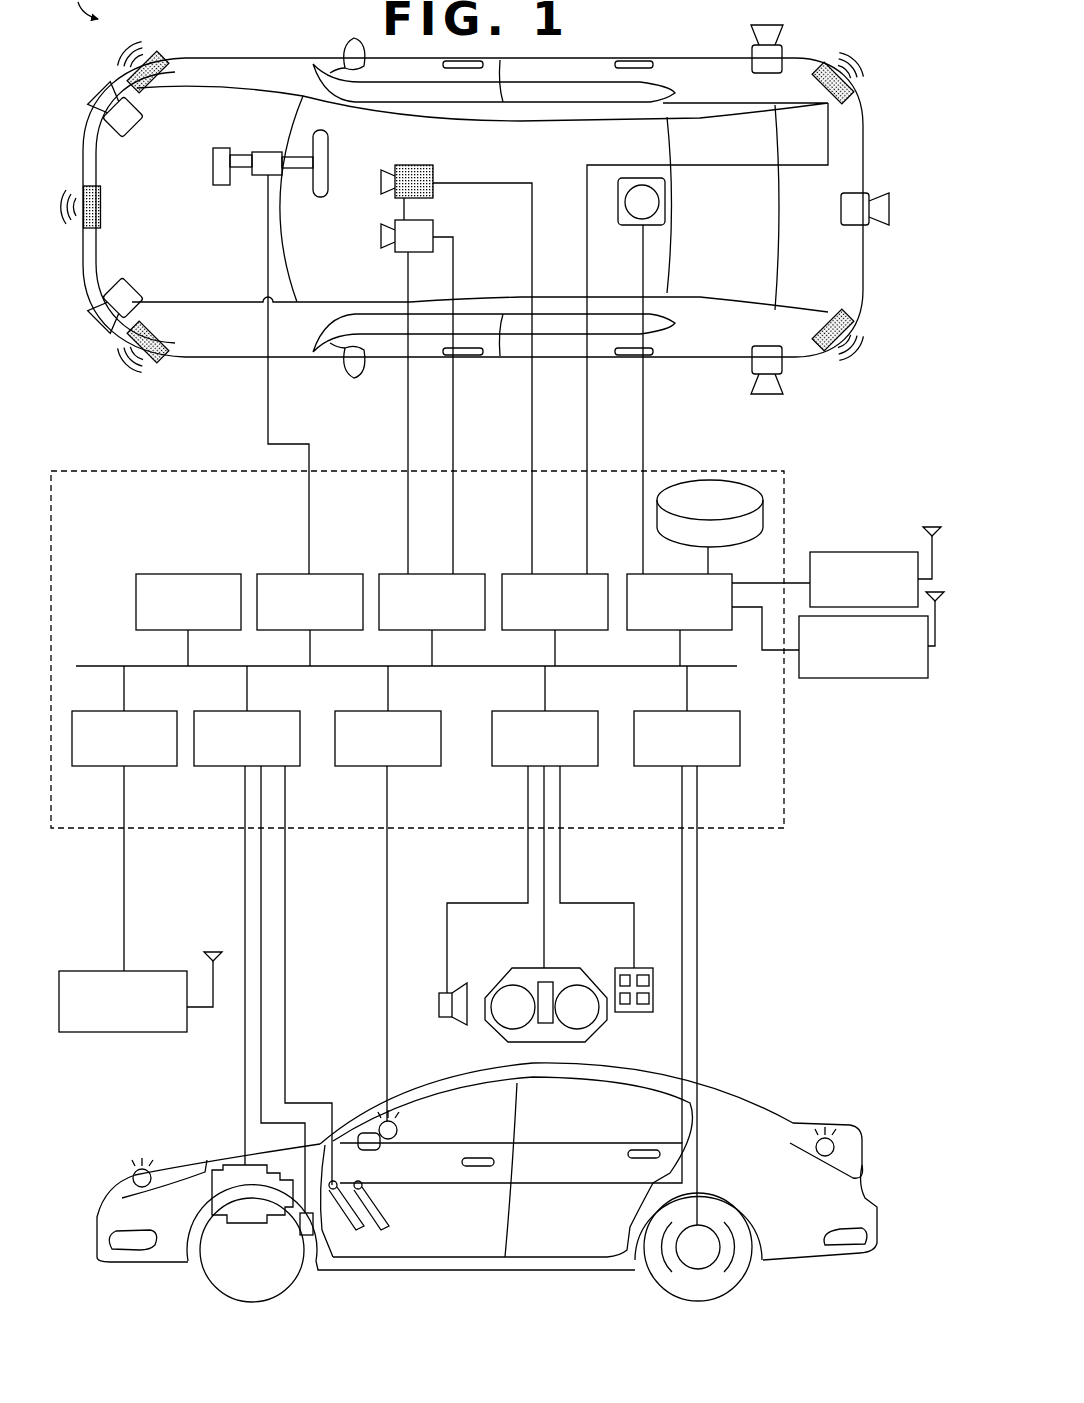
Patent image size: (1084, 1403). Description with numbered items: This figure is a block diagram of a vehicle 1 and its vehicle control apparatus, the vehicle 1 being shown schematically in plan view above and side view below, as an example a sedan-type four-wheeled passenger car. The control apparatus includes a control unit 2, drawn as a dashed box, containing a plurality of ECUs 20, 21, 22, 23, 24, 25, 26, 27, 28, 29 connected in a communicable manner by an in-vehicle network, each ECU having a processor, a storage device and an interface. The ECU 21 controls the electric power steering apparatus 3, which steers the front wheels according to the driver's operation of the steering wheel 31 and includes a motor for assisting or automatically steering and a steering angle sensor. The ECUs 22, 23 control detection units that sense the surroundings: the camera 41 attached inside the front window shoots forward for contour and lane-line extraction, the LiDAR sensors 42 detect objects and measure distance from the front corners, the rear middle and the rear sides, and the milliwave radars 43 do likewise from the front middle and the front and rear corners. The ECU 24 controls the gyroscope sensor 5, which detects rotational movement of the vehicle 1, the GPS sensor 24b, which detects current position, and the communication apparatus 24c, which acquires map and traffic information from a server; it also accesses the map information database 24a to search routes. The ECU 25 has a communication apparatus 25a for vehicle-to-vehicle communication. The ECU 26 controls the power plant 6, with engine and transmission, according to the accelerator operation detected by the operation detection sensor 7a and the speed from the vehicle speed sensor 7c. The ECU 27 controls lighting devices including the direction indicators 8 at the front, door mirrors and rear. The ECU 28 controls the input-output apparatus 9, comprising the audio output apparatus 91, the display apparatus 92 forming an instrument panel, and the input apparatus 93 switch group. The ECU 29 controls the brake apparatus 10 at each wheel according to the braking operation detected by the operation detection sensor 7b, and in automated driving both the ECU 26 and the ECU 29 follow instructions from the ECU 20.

The vehicle 1 is at (876, 114).
The control unit 2 is at (784, 830).
The electric power steering apparatus 3 is at (223, 186).
The steering wheel 31 is at (318, 198).
The camera 41 is at (433, 173).
The LiDAR sensor 42 is at (128, 136).
The radar 43 is at (160, 58).
The gyroscope sensor 5 is at (665, 200).
The power plant 6 is at (216, 1165).
The operation detection sensor 7a is at (340, 1145).
The operation detection sensor 7b is at (364, 1182).
The vehicle speed sensor 7c is at (310, 1240).
The direction indicator 8 is at (133, 1172).
The input-output apparatus 9 is at (534, 1015).
The audio output apparatus 91 is at (439, 1000).
The display apparatus 92 is at (503, 978).
The input apparatus 93 is at (633, 1012).
The brake apparatus 10 is at (698, 1270).
The ECU 20 is at (220, 574).
The ECU 21 is at (340, 574).
The ECU 22 is at (435, 574).
The ECU 23 is at (561, 574).
The ECU 24 is at (626, 574).
The map information database 24a is at (706, 482).
The GPS sensor 24b is at (870, 552).
The communication apparatus 24c is at (866, 678).
The ECU 25 is at (154, 766).
The communication apparatus 25a is at (125, 1032).
The ECU 26 is at (222, 766).
The ECU 27 is at (416, 766).
The ECU 28 is at (582, 766).
The ECU 29 is at (718, 766).